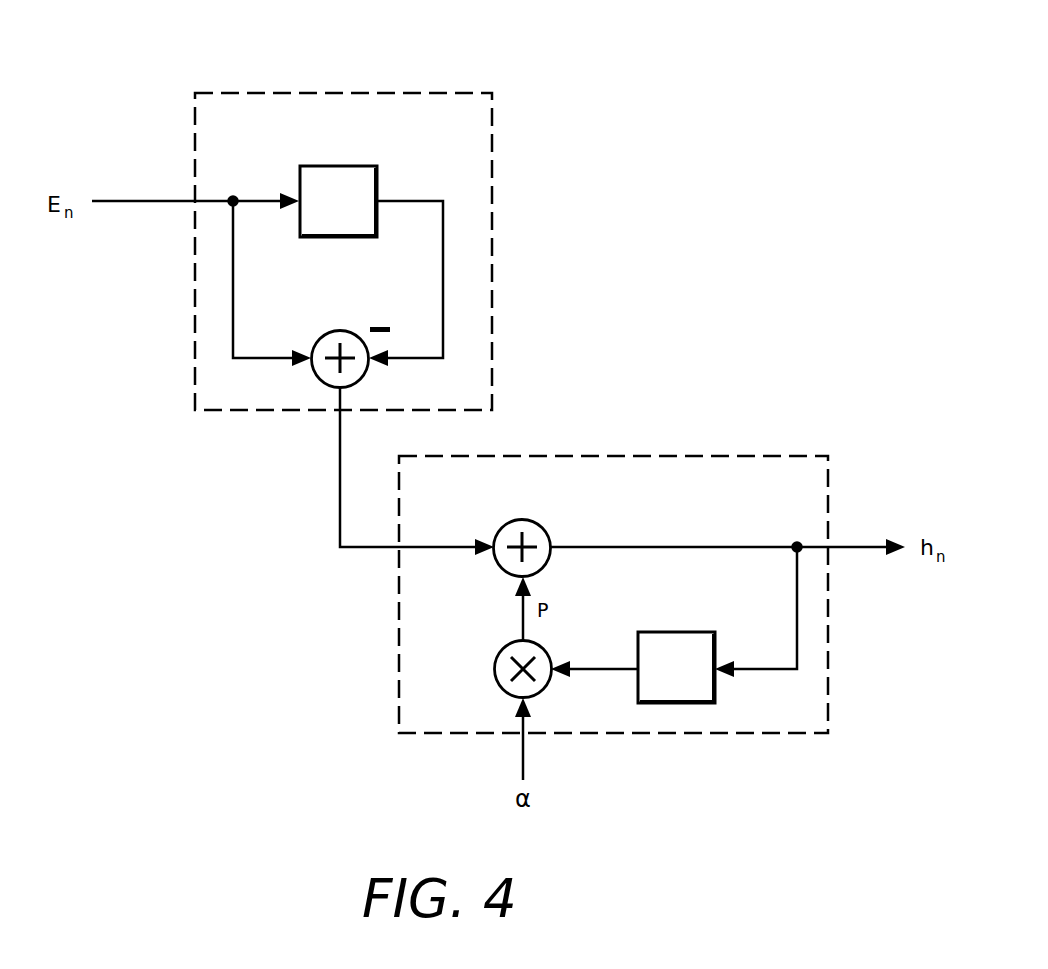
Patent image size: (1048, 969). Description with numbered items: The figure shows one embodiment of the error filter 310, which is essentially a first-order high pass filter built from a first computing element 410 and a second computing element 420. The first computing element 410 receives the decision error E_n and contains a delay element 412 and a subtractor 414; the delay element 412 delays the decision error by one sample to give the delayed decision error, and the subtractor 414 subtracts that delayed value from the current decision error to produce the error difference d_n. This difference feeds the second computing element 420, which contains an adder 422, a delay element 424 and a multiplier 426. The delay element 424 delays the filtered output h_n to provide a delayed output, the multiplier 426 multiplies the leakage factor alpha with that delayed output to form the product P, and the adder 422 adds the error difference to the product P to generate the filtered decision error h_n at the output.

The error filter 310 is at (882, 82).
The first computing element 410 is at (482, 140).
The delay element 412 is at (353, 177).
The subtractor 414 is at (352, 340).
The second computing element 420 is at (762, 467).
The adder 422 is at (533, 535).
The delay element 424 is at (695, 643).
The multiplier 426 is at (496, 667).